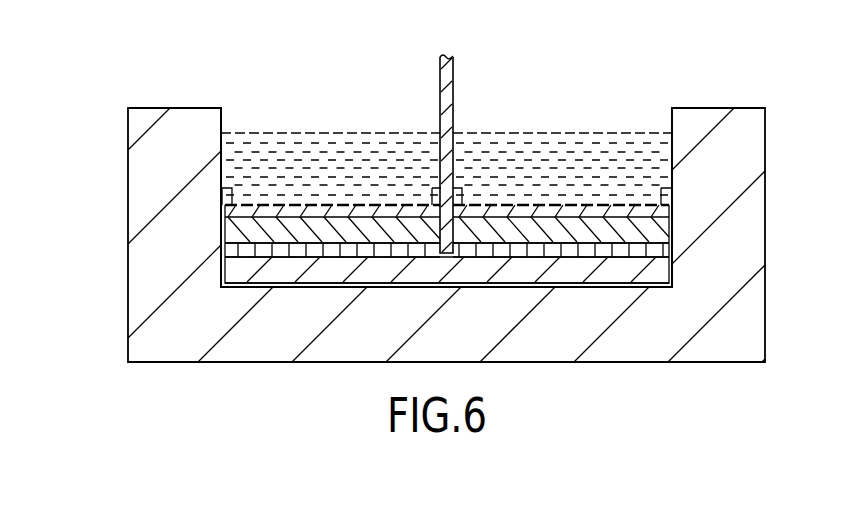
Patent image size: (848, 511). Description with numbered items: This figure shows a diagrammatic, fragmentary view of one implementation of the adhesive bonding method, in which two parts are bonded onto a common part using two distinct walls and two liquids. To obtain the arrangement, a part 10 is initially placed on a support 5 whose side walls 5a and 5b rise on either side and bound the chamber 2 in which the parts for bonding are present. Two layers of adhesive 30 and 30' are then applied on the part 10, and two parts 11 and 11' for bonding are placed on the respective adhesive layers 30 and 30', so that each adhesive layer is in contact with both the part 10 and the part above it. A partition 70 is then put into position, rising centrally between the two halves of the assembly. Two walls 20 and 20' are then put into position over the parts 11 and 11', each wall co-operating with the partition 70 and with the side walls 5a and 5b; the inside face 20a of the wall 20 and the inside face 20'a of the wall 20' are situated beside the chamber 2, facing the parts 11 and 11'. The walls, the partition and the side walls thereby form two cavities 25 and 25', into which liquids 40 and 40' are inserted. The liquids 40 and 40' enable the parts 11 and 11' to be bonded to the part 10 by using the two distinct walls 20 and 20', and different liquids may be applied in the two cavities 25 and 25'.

The support 5 is at (340, 362).
The side wall 5a is at (127, 150).
The side wall 5b is at (766, 150).
The chamber 2 is at (389, 288).
The first part 11 is at (316, 253).
The part for bonding 11' is at (581, 253).
The part 10 is at (311, 270).
The layer of adhesive 30 is at (330, 277).
The layer of adhesive 30' is at (570, 276).
The wall 20 is at (309, 202).
The wall 20' is at (587, 196).
The inside face of the wall 20a is at (237, 228).
The inside face of the wall 20'a is at (593, 226).
The liquid 40 is at (309, 164).
The liquid 40' is at (586, 164).
The cavity 25 is at (325, 110).
The cavity 25' is at (565, 110).
The partition 70 is at (453, 98).